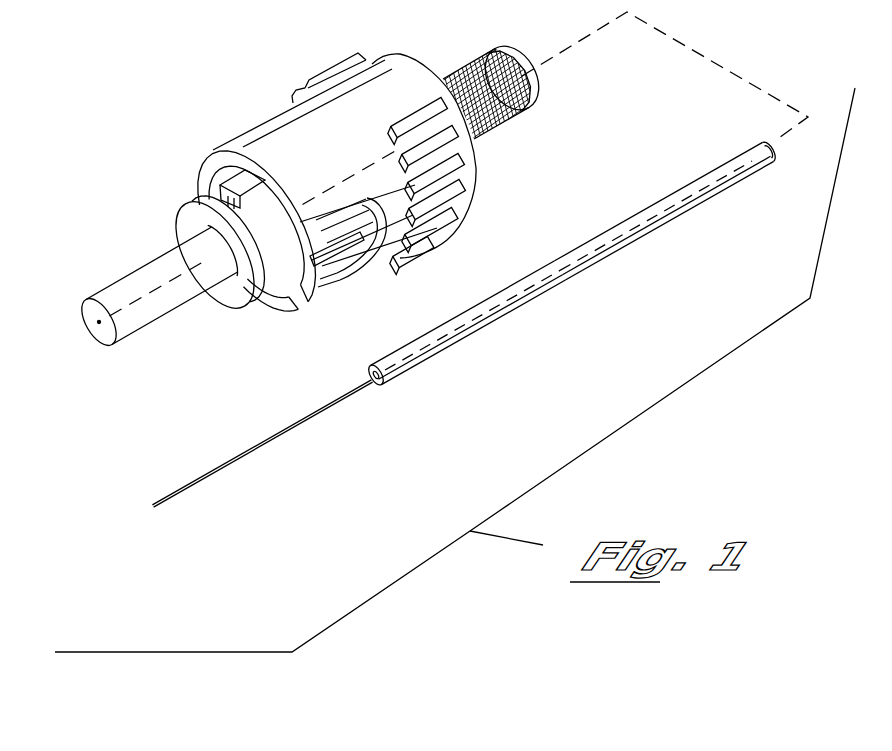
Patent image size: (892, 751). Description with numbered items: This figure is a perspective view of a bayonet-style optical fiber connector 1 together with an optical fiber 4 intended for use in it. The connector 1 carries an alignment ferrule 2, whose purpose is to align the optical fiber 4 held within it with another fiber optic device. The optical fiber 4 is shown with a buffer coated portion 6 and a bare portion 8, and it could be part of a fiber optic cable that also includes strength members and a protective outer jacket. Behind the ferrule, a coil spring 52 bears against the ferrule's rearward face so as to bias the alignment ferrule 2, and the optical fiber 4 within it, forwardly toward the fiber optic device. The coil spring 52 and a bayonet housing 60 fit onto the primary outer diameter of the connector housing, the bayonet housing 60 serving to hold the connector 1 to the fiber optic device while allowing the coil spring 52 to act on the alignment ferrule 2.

The optical fiber connector 1 is at (312, 203).
The alignment ferrule 2 is at (141, 266).
The optical fiber 4 is at (450, 341).
The buffer coated portion 6 is at (558, 270).
The bare portion 8 is at (257, 445).
The coil spring 52 is at (265, 273).
The bayonet housing 60 is at (372, 90).